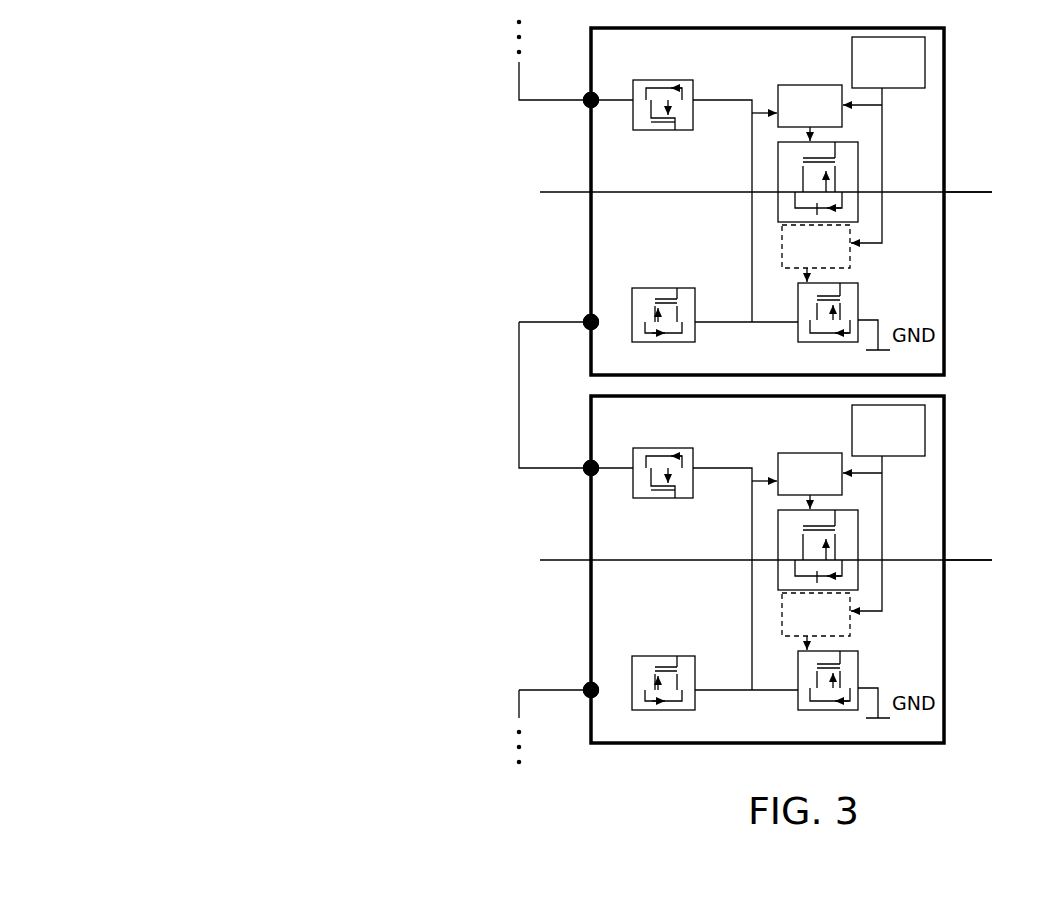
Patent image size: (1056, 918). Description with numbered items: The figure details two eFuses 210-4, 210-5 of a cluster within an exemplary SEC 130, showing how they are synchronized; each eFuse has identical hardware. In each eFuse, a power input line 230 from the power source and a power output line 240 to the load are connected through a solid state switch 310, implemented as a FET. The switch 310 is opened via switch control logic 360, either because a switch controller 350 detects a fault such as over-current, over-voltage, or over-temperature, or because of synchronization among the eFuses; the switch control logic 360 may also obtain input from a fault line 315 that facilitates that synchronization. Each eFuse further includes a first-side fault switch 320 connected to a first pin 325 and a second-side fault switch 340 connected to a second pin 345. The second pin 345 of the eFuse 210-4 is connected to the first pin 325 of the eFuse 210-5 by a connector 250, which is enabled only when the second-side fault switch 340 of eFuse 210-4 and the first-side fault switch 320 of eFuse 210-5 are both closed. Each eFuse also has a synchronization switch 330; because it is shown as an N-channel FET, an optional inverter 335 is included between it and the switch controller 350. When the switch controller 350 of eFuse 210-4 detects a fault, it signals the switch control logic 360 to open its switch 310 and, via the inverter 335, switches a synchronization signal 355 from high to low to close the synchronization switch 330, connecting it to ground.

The SEC 130 is at (236, 78).
The connector 250 is at (516, 87).
The first pin 325 is at (587, 91).
The eFuse 210-4 is at (669, 57).
The eFuse 210-5 is at (669, 425).
The first-side fault switch 320 is at (688, 80).
The switch controller 350 is at (888, 246).
The switch control logic 360 is at (810, 297).
The fault line 315 is at (752, 160).
The power input line 230 is at (568, 190).
The power output line 240 is at (983, 190).
The synchronization signal 355 is at (879, 168).
The solid state switch 310 is at (778, 200).
The second pin 345 is at (588, 313).
The second-side fault switch 340 is at (657, 287).
The inverter 335 is at (850, 255).
The synchronization switch 330 is at (858, 292).